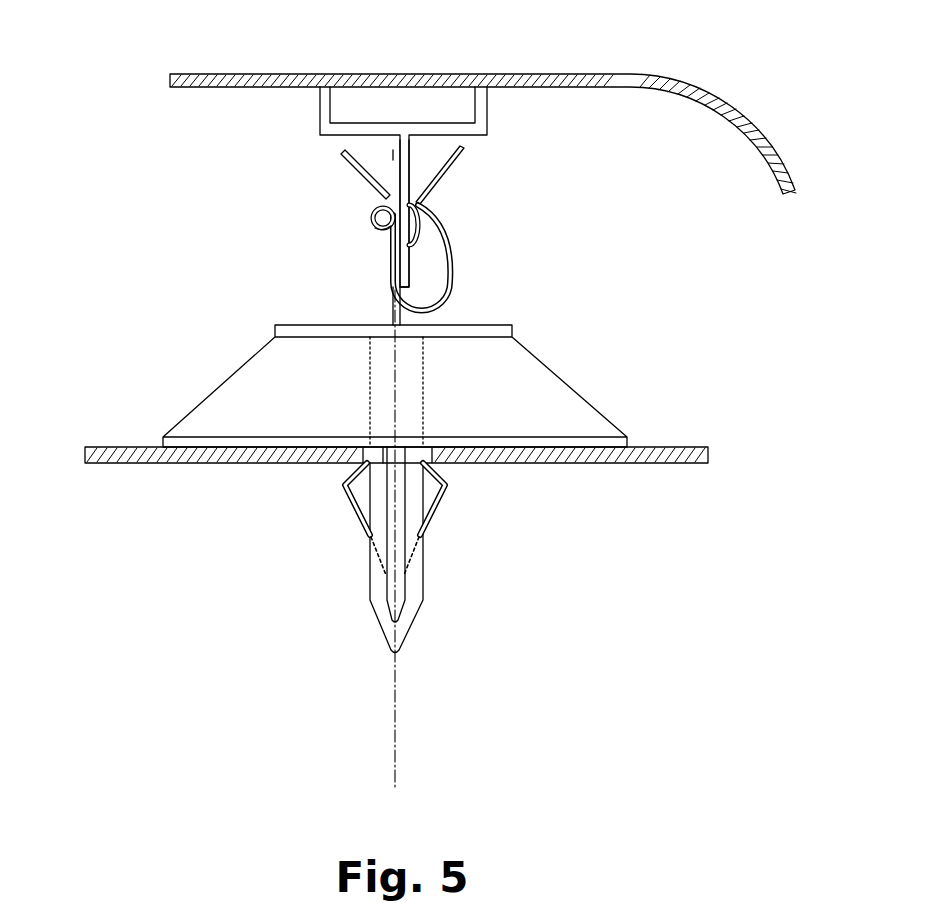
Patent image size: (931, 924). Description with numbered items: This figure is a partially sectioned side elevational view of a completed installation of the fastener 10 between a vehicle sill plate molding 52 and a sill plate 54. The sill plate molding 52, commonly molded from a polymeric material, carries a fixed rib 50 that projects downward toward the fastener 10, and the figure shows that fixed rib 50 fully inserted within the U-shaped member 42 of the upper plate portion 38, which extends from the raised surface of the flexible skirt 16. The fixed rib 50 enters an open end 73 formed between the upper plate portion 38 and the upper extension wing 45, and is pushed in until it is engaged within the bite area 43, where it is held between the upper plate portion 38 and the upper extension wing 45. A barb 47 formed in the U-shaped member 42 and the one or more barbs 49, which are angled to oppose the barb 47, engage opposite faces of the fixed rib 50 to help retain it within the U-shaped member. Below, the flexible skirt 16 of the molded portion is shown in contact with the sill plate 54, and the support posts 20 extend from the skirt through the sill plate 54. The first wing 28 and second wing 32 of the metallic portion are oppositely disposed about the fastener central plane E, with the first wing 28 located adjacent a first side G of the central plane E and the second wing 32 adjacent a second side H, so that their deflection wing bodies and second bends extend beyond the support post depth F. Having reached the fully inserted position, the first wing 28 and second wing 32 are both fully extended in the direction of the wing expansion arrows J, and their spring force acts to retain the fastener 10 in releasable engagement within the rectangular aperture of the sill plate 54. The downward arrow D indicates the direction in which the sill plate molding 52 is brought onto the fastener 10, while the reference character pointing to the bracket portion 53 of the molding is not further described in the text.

The fastener 10 is at (190, 283).
The flexible skirt 16 is at (587, 412).
The support posts 20 is at (373, 612).
The first wing 28 is at (438, 497).
The second wing 32 is at (348, 497).
The upper plate portion 38 is at (350, 173).
The U-shaped member 42 is at (447, 260).
The bite area 43 is at (375, 192).
The upper extension wing 45 is at (447, 163).
The barb 47 is at (418, 218).
The barbs 49 is at (380, 228).
The fixed rib 50 is at (410, 150).
The sill plate molding 52 is at (263, 74).
The bracket 53 is at (323, 110).
The sill plate 54 is at (682, 445).
The open end 73 is at (397, 150).
The direction of insertion D is at (422, 52).
The fastener central plane E is at (395, 767).
The support post depth F is at (370, 630).
The first side G is at (425, 575).
The second side H is at (368, 575).
The wing expansion arrows J is at (510, 483).